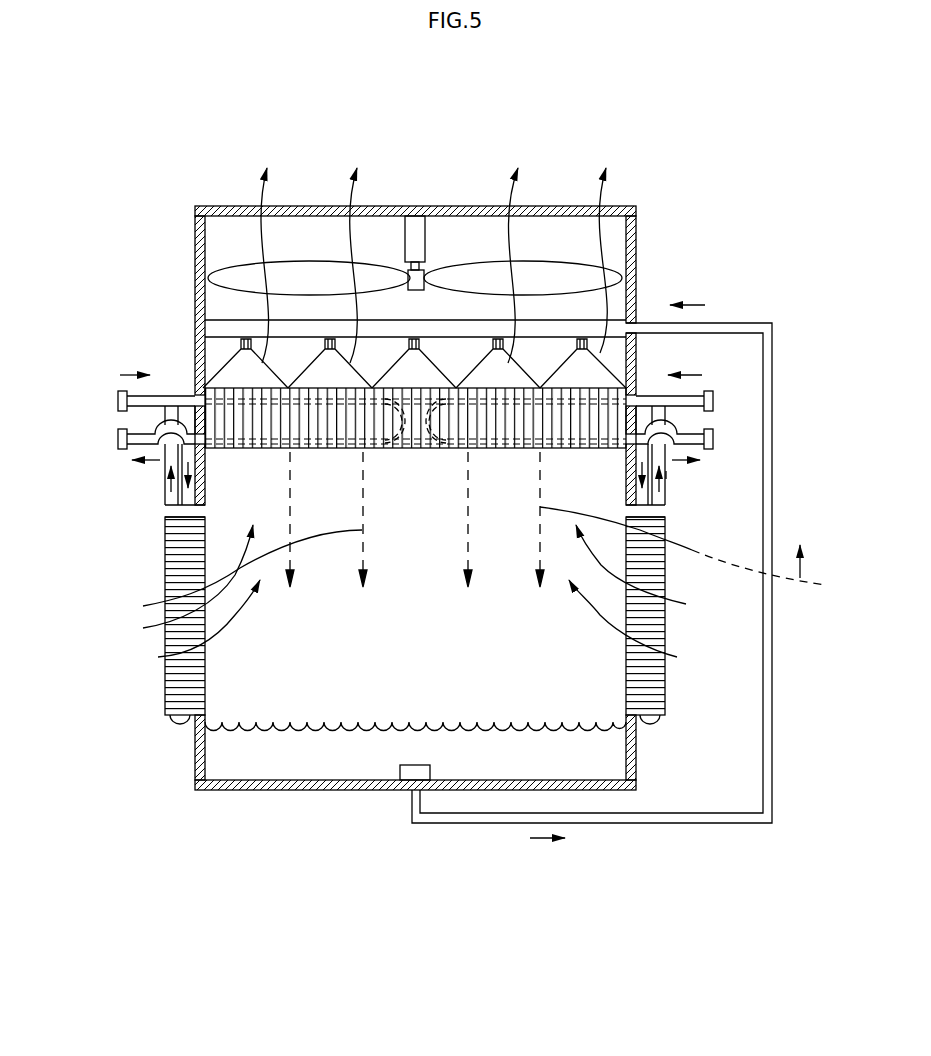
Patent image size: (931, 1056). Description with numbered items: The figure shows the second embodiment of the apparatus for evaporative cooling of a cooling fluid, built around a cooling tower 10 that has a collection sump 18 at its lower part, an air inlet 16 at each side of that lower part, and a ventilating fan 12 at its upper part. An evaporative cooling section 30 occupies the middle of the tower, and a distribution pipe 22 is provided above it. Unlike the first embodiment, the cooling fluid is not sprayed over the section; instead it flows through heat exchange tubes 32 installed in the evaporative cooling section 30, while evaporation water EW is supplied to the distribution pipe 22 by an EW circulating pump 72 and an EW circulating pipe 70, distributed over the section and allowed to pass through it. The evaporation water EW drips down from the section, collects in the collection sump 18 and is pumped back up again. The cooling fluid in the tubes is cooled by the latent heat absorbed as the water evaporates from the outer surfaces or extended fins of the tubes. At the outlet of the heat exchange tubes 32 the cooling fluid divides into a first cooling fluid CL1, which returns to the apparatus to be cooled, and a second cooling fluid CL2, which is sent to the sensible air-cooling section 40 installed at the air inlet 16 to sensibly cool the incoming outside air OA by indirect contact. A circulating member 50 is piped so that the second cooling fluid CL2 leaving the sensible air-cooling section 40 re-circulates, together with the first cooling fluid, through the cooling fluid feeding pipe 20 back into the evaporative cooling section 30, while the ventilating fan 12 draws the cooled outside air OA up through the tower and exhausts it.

The cooling tower 10 is at (676, 216).
The ventilating fan 12 is at (465, 265).
The air inlet 16 is at (669, 683).
The collection sump 18 is at (204, 760).
The cooling fluid feeding pipe 20 is at (692, 400).
The distribution pipe 22 is at (636, 291).
The evaporative cooling section 30 is at (226, 393).
The heat exchange tubes 32 is at (253, 395).
The sensible air-cooling section 40 is at (162, 566).
The circulating member 50 is at (188, 494).
The EW circulating pipe 70 is at (772, 643).
The EW circulating pump 72 is at (399, 772).
The first cooling fluid CL1 is at (692, 375).
The second cooling fluid CL2 is at (666, 475).
The evaporation water EW is at (365, 760).
The outside air OA is at (688, 604).